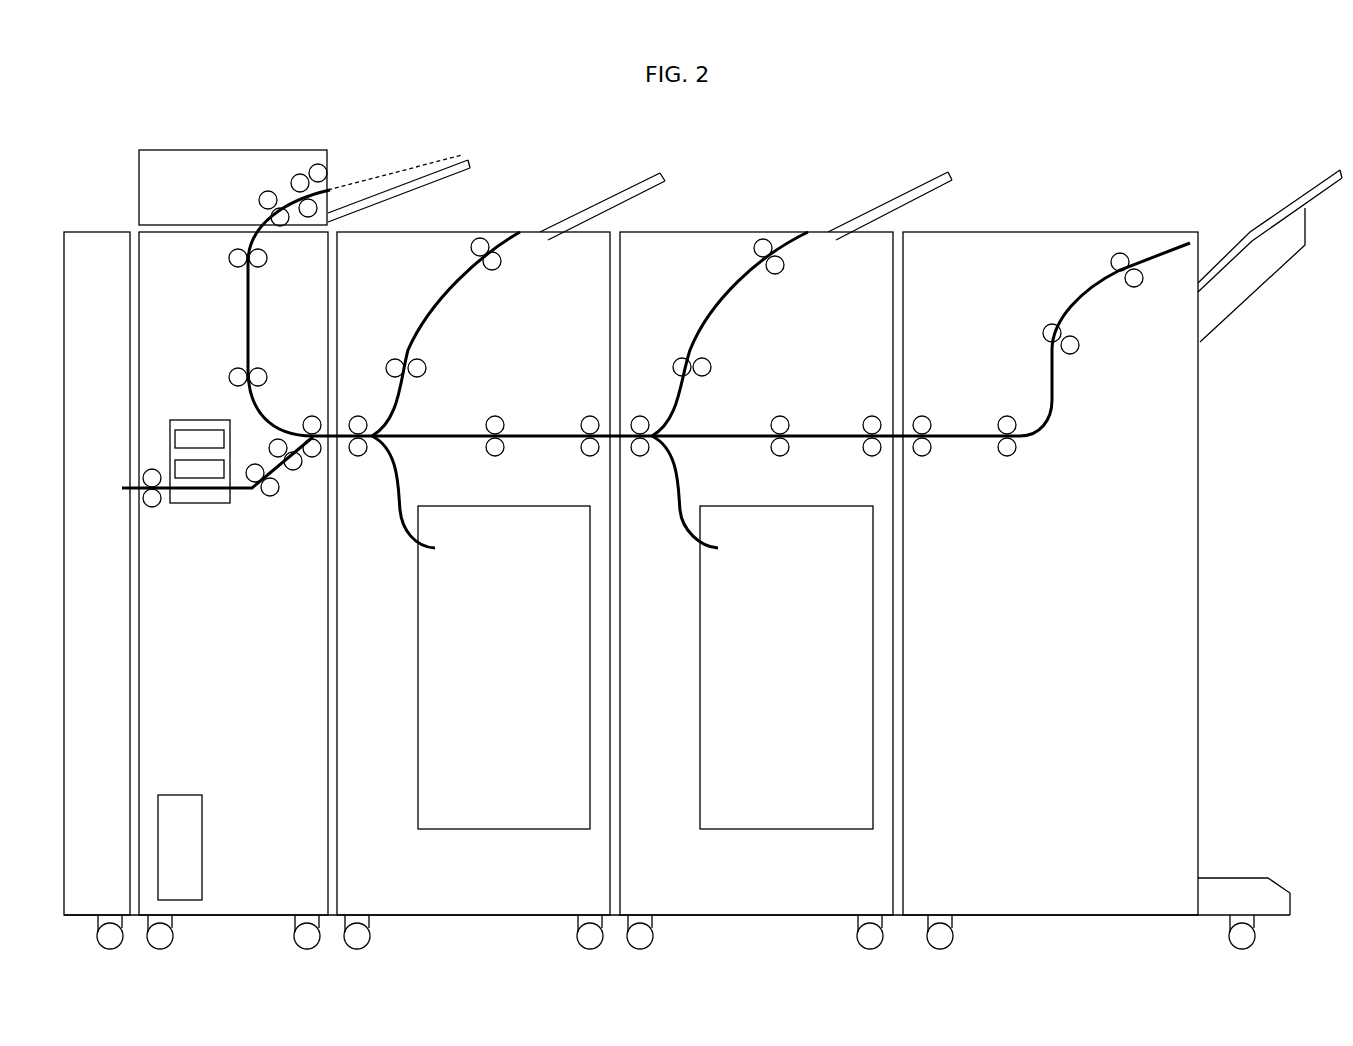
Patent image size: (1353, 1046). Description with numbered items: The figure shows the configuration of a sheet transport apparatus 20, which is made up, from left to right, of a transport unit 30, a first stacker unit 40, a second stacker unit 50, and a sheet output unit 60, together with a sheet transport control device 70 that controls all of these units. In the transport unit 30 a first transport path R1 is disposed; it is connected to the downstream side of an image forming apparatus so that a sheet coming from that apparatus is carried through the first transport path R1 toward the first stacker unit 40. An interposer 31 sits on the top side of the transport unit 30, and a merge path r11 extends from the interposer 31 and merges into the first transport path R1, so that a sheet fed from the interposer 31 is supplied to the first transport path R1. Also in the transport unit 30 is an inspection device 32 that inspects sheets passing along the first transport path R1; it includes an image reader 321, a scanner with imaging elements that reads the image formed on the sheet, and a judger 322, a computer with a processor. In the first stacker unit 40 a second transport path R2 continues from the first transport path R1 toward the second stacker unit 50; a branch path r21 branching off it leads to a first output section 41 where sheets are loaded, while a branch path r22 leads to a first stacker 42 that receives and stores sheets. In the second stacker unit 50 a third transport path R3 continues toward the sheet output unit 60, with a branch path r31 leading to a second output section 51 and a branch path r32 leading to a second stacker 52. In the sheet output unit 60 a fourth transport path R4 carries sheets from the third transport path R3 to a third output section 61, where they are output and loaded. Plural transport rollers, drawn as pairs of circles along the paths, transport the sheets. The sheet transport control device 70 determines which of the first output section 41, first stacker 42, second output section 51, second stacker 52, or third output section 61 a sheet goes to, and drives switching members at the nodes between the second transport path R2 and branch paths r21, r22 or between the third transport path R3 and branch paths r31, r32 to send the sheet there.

The sheet transport apparatus 20 is at (1030, 125).
The transport unit 30 is at (130, 295).
The interposer 31 is at (262, 150).
The inspection device 32 is at (190, 420).
The image reader 321 is at (170, 470).
The judger 322 is at (170, 440).
The first stacker unit 40 is at (455, 232).
The first output section 41 is at (625, 180).
The first stacker 42 is at (510, 829).
The second stacker unit 50 is at (735, 232).
The second output section 51 is at (905, 178).
The second stacker 52 is at (795, 829).
The sheet output unit 60 is at (1110, 232).
The third output section 61 is at (1295, 170).
The sheet transport control device 70 is at (160, 847).
The first transport path R1 is at (242, 500).
The second transport path R2 is at (540, 430).
The third transport path R3 is at (825, 430).
The fourth transport path R4 is at (1060, 386).
The merge path r11 is at (243, 298).
The branch path r21 is at (430, 283).
The branch path r22 is at (400, 483).
The branch path r31 is at (717, 283).
The branch path r32 is at (685, 483).